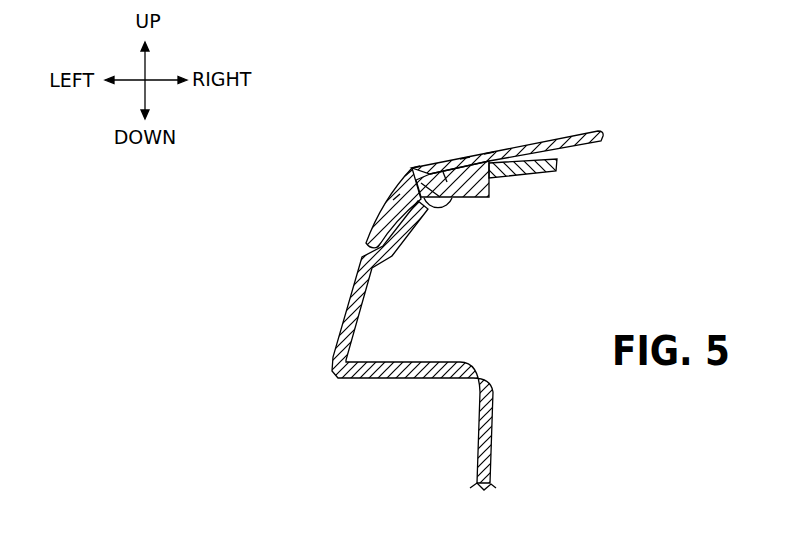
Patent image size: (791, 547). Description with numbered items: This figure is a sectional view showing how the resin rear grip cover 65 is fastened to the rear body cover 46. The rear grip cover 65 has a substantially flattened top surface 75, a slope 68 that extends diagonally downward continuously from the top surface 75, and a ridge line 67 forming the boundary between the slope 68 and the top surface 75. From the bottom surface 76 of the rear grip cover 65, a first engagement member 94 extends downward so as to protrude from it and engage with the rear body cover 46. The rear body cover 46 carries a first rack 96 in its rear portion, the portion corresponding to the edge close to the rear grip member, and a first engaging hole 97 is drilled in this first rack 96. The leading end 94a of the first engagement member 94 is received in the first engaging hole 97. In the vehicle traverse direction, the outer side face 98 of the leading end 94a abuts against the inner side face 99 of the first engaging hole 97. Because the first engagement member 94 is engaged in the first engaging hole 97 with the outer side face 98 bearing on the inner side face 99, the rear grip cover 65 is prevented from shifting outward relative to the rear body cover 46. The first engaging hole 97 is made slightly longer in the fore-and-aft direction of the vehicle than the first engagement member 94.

The rear body cover 46 is at (331, 328).
The rear grip cover 65 is at (541, 141).
The ridge line 67 is at (412, 168).
The slope 68 is at (393, 209).
The top surface 75 is at (463, 158).
The bottom surface 76 is at (568, 150).
The first engagement member 94 is at (472, 195).
The leading end 94a is at (463, 203).
The first rack 96 is at (405, 176).
The first engaging hole 97 is at (489, 153).
The outer side face 98 is at (443, 172).
The inner side face 99 is at (393, 200).